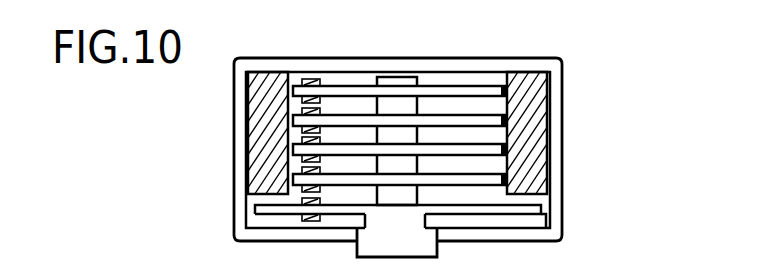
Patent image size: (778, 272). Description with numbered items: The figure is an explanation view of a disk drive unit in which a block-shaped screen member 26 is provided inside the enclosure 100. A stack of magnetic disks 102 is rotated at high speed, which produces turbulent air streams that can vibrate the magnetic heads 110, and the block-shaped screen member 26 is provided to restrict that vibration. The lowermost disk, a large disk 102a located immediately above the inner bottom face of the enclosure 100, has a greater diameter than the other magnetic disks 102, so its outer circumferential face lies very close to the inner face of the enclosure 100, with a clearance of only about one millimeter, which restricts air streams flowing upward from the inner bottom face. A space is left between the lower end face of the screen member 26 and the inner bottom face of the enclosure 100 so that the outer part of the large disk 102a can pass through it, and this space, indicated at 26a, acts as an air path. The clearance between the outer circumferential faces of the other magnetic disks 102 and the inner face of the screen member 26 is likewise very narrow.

The enclosure 100 is at (557, 152).
The block-shaped screen member 26 is at (262, 112).
The lower portion of spacer block 26a is at (543, 203).
The magnetic disks 102 is at (470, 92).
The large disk 102a is at (521, 210).
The magnetic heads 110 is at (292, 172).